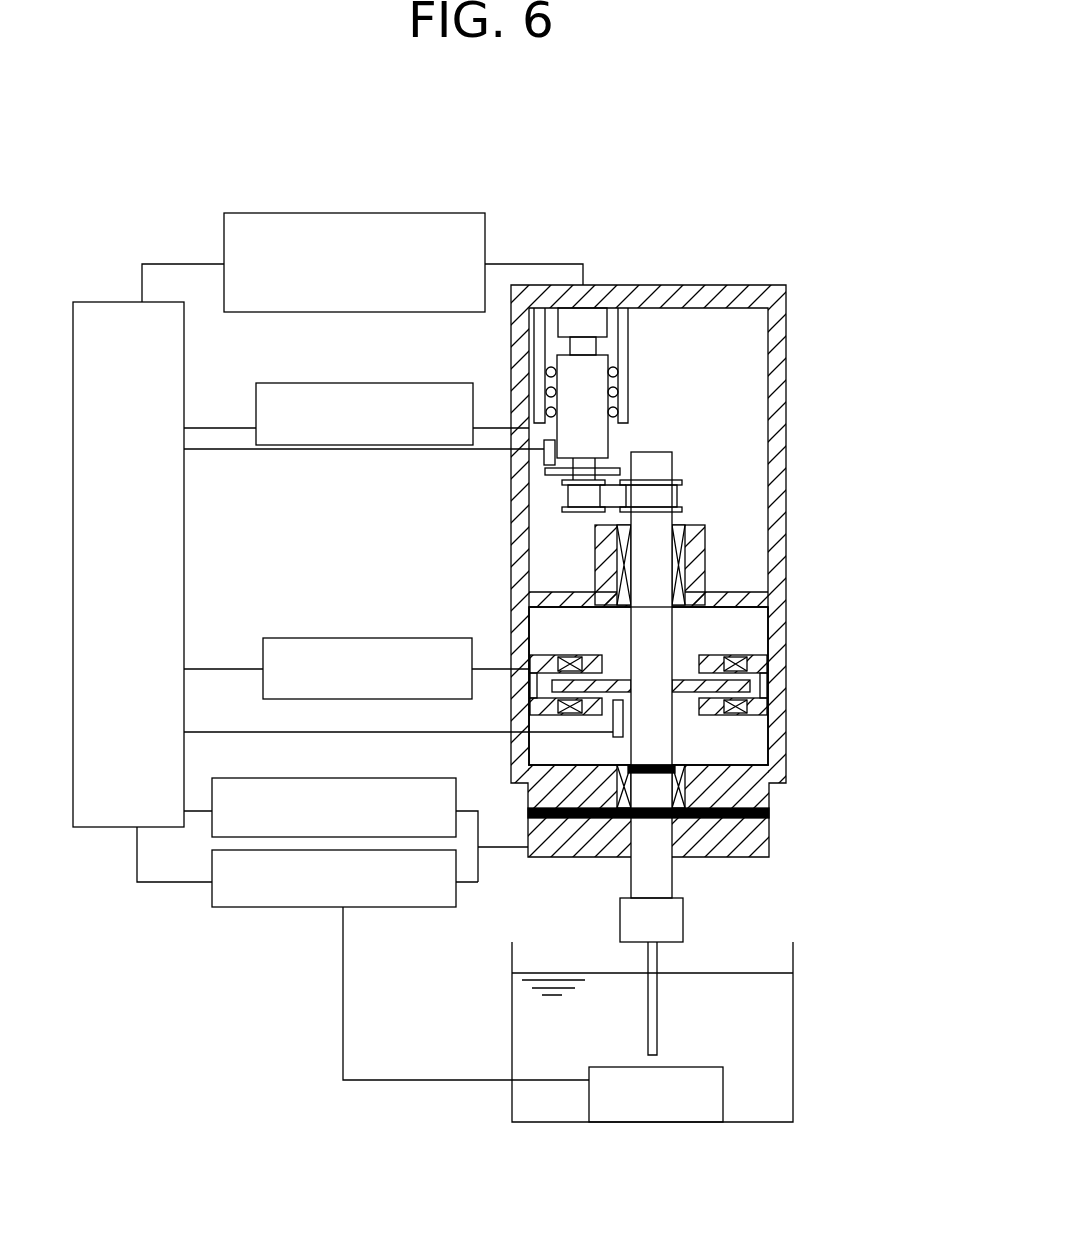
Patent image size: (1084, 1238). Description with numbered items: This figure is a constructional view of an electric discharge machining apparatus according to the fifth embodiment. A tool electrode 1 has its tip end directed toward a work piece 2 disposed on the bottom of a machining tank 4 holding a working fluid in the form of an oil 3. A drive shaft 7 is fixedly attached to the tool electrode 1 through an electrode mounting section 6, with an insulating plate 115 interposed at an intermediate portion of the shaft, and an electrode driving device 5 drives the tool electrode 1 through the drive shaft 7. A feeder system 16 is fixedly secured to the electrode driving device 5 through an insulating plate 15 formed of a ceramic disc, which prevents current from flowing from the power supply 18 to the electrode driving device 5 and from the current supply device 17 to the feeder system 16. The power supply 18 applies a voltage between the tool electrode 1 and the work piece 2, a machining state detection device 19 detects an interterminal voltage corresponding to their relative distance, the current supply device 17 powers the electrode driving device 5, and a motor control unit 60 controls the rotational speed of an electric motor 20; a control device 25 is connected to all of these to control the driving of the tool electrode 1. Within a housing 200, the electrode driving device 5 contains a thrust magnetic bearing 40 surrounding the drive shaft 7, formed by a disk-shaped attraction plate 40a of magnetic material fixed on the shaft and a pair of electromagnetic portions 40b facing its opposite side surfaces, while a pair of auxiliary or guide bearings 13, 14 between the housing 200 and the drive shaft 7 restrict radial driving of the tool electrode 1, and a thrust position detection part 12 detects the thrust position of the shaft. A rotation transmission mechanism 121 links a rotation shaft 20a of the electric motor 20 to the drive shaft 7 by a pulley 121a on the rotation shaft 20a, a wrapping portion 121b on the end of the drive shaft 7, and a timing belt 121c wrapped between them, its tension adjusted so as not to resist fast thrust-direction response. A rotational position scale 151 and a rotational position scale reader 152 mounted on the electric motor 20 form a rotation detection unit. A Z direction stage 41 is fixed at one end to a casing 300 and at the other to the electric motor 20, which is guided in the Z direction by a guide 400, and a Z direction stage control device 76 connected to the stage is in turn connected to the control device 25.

The tool electrode 1 is at (657, 953).
The work piece 2 is at (723, 1090).
The oil 3 is at (773, 970).
The machining tank 4 is at (793, 1005).
The electrode driving device 5 is at (733, 622).
The electrode mounting section 6 is at (683, 907).
The drive shaft 7 is at (630, 640).
The thrust position detection part 12 is at (612, 730).
The guide bearing 13 is at (690, 525).
The guide bearing 14 is at (700, 760).
The insulating plate 15 is at (772, 813).
The feeder system 16 is at (772, 838).
The current supply device 17 is at (382, 638).
The power supply 18 is at (223, 908).
The machining state detection device 19 is at (410, 777).
The electric motor 20 is at (547, 362).
The rotation shaft 20a is at (587, 463).
The control device 25 is at (102, 300).
The thrust magnetic bearing 40 is at (552, 688).
The attraction plate 40a is at (673, 683).
The electromagnetic portions 40b is at (760, 662).
The Z direction stage 41 is at (613, 318).
The motor control unit 60 is at (365, 383).
The Z direction stage control device 76 is at (353, 213).
The insulating plate 115 is at (673, 763).
The rotation transmission mechanism 121 is at (682, 497).
The pulley 121a is at (562, 508).
The wrapping portion 121b is at (680, 482).
The timing belt 121c is at (615, 497).
The rotational position scale 151 is at (545, 472).
The rotational position scale reader 152 is at (544, 453).
The housing 200 is at (512, 643).
The casing 300 is at (780, 315).
The guide 400 is at (625, 342).